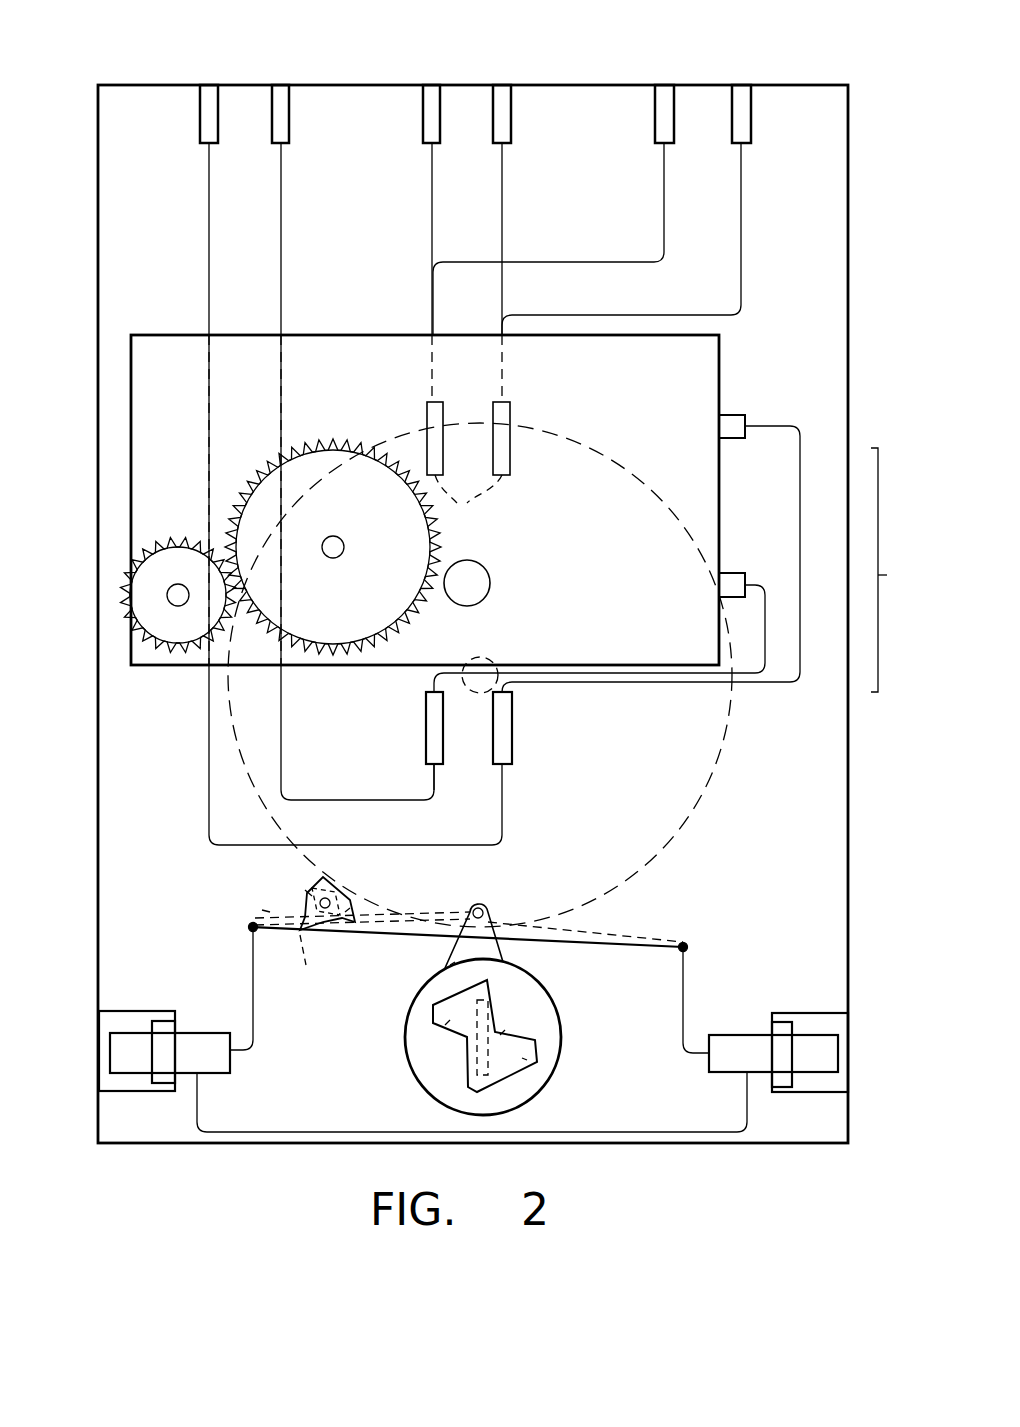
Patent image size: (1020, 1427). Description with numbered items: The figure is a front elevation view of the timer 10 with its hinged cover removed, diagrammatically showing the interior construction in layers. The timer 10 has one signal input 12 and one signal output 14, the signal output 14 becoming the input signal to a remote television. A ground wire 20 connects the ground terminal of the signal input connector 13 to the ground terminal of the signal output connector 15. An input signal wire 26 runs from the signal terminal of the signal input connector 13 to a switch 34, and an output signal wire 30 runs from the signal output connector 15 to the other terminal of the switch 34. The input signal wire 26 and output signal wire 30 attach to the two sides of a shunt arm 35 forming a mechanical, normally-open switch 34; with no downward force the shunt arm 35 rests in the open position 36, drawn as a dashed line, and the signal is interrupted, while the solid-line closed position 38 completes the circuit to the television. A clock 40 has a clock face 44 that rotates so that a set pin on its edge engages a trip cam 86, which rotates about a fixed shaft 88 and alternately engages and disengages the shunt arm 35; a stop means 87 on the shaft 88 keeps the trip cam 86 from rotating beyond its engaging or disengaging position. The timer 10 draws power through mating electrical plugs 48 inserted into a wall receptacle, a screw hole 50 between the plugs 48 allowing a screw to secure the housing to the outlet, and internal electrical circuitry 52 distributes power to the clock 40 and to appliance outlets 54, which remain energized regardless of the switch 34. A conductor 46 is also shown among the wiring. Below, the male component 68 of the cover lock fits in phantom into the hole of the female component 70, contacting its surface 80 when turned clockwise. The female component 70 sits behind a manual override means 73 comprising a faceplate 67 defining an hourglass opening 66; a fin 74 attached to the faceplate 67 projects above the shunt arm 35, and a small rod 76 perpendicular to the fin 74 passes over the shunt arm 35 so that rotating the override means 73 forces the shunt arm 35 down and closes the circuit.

The timer 10 is at (893, 570).
The signal input 12 is at (92, 1035).
The signal input connector 13 is at (110, 1050).
The signal output 14 is at (855, 1025).
The signal output connector 15 is at (838, 1072).
The ground wire 20 is at (318, 1131).
The input signal wire 26 is at (253, 1005).
The output signal wire 30 is at (683, 975).
The switch 34 is at (243, 918).
The shunt arm 35 is at (370, 935).
The open position 36 is at (262, 910).
The closed position 38 is at (248, 935).
The clock 40 is at (722, 400).
The clock face 44 is at (583, 465).
The conductor 46 is at (471, 765).
The electrical plugs 48 is at (580, 748).
The screw hole 50 is at (490, 582).
The internal electrical circuitry 52 is at (427, 290).
The appliance outlets 54 is at (668, 73).
The hourglass opening 66 is at (512, 1062).
The faceplate 67 is at (417, 1076).
The male component 68 is at (445, 1025).
The female component 70 is at (527, 1060).
The manual override means 73 is at (553, 1040).
The fin 74 is at (450, 965).
The rod 76 is at (483, 905).
The surface 80 is at (505, 1030).
The trip cam 86 is at (333, 873).
The stop means 87 is at (305, 890).
The shaft 88 is at (350, 908).